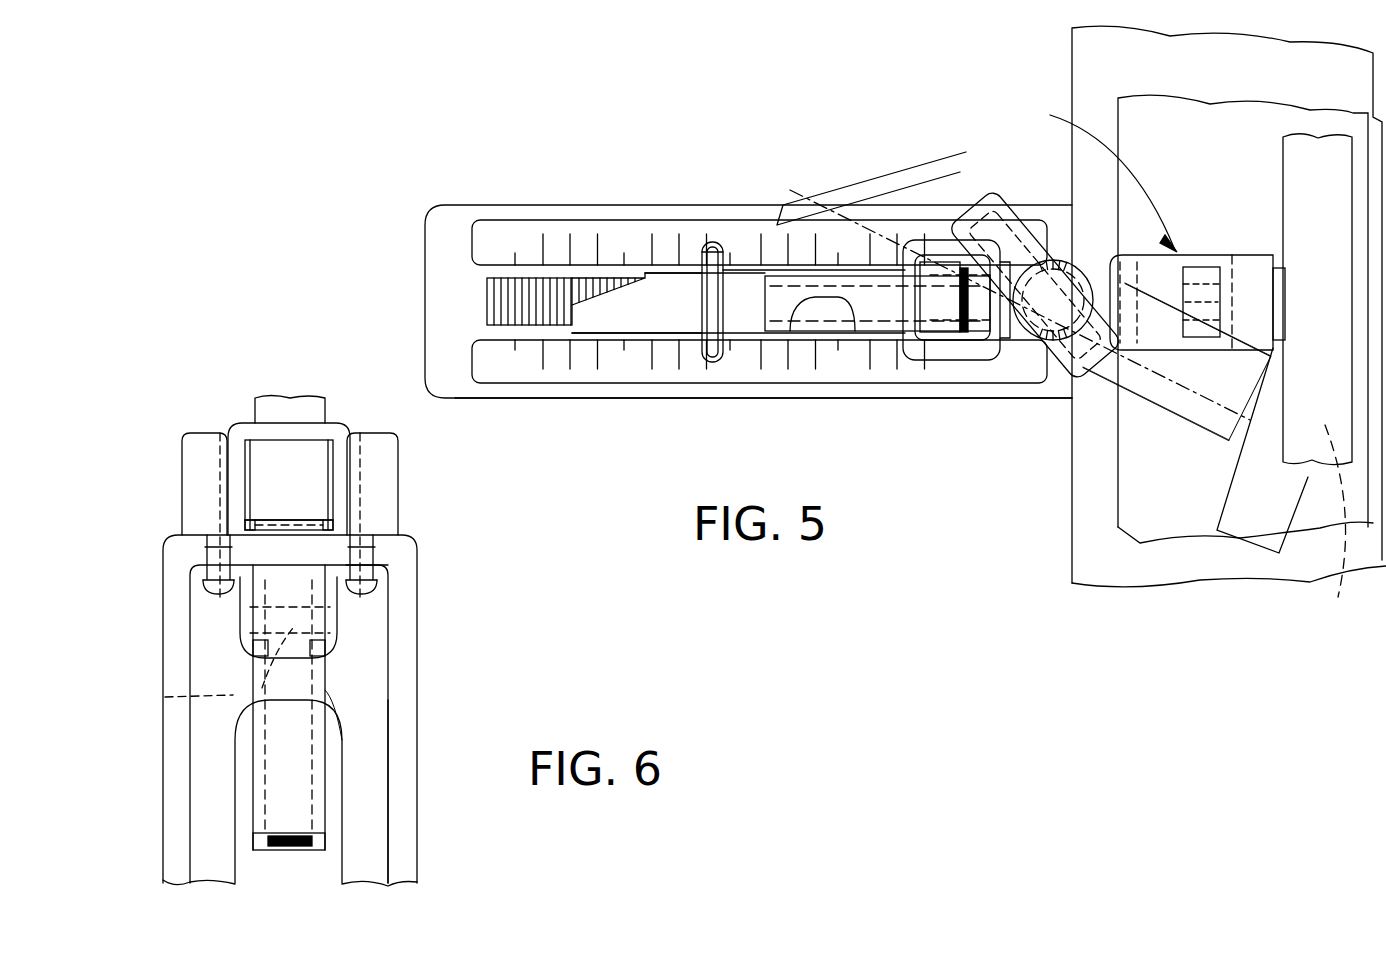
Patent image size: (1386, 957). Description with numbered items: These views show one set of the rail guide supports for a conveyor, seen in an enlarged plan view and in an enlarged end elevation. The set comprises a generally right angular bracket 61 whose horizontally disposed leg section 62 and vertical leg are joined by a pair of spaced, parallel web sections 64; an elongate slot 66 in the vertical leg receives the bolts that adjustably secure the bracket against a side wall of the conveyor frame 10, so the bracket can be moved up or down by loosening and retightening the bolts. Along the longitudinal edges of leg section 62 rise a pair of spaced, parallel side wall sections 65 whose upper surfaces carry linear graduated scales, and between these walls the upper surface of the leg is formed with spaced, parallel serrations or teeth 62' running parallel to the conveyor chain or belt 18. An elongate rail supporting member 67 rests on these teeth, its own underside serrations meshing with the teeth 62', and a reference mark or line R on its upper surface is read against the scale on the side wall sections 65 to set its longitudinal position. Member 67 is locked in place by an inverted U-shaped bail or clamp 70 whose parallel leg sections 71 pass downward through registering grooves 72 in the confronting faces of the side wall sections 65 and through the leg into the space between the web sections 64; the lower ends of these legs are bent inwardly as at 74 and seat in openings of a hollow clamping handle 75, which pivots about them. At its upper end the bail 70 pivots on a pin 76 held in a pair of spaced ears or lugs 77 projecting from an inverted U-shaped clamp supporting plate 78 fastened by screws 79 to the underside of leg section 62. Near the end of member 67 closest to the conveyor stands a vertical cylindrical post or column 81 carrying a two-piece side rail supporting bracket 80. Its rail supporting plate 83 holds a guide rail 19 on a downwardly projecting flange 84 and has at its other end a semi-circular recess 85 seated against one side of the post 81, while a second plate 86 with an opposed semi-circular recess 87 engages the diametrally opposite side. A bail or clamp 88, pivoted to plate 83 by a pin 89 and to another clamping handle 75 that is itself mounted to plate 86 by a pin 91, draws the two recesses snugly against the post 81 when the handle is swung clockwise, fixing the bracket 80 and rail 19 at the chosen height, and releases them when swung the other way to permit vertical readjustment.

In FIG. 5, the frame 10 is at (1068, 583).
In FIG. 5, the conveyor chain or belt 18 is at (1245, 319).
In FIG. 5, the guide rail 19 is at (1283, 168).
In FIG. 5, the right angular bracket 61 is at (612, 398).
In FIG. 6, the right angular bracket 61 is at (410, 808).
In FIG. 5, the horizontal bracket leg section 62 is at (707, 301).
In FIG. 6, the horizontal bracket leg section 62 is at (252, 683).
In FIG. 5, the serrations or teeth 62' is at (530, 303).
In FIG. 6, the serrations or teeth 62' is at (218, 481).
In FIG. 6, the web sections 64 is at (175, 752).
In FIG. 5, the side wall sections 65 is at (470, 240).
In FIG. 6, the side wall sections 65 is at (197, 440).
In FIG. 6, the elongate slot 66 is at (340, 855).
In FIG. 5, the rail supporting member 67 is at (590, 285).
In FIG. 6, the rail supporting member 67 is at (289, 485).
In FIG. 5, the bail or clamp 70 is at (712, 250).
In FIG. 6, the bail or clamp 70 is at (268, 420).
In FIG. 6, the bail leg sections 71 is at (217, 607).
In FIG. 5, the grooves 72 is at (704, 255).
In FIG. 6, the inwardly bent ends 74 is at (237, 663).
In FIG. 5, the clamping handle 75 is at (815, 185).
In FIG. 6, the clamping handle 75 is at (253, 805).
In FIG. 6, the pin 76 is at (260, 687).
In FIG. 6, the ears or lugs 77 is at (242, 627).
In FIG. 6, the clamp supporting plate 78 is at (388, 565).
In FIG. 6, the screws 79 is at (200, 590).
In FIG. 5, the side rail supporting bracket 80 is at (1094, 172).
In FIG. 5, the side rail supporting post or column 81 is at (1053, 300).
In FIG. 5, the rail supporting plate 83 is at (1078, 362).
In FIG. 5, the flange 84 is at (1232, 282).
In FIG. 5, the semi-circular recess 85 is at (1007, 243).
In FIG. 5, the second plate 86 is at (930, 330).
In FIG. 5, the semi-circular recess 87 is at (1033, 243).
In FIG. 5, the bail or clamp 88 is at (948, 193).
In FIG. 5, the pin 89 is at (1140, 352).
In FIG. 5, the pin 91 is at (950, 350).
In FIG. 5, the reference mark or line R is at (805, 325).